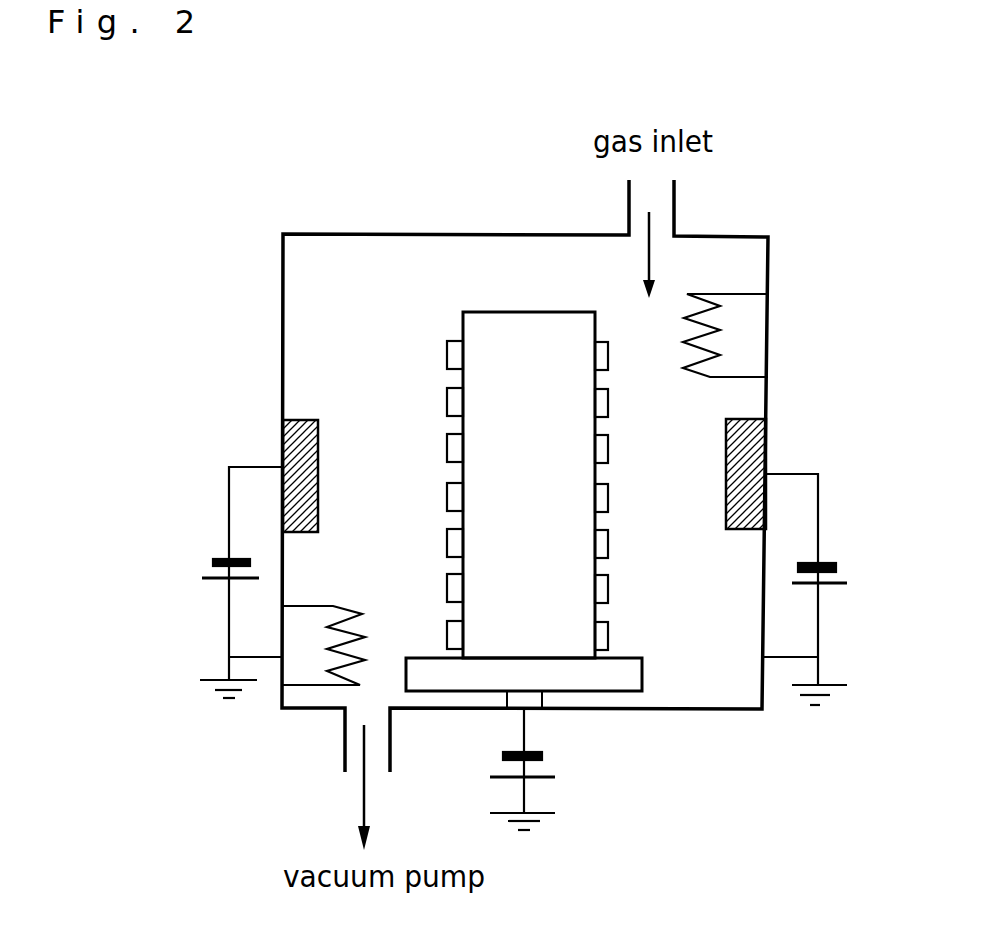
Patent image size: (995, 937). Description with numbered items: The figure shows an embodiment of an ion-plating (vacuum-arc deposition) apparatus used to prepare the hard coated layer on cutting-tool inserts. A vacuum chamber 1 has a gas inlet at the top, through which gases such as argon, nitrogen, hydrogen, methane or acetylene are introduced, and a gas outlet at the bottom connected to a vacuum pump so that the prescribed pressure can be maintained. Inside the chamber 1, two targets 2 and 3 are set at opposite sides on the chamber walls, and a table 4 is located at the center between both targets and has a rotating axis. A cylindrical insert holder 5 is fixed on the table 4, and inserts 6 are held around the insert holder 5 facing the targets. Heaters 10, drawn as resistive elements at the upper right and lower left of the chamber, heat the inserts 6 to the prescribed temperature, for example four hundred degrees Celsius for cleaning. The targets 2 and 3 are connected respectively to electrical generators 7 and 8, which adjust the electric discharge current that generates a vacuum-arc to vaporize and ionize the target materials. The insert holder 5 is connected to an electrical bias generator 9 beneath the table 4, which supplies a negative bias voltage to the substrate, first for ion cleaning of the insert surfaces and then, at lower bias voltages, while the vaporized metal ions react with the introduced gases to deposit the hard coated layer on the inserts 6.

The vacuum chamber 1 is at (375, 234).
The target 2 is at (298, 450).
The target 3 is at (766, 435).
The table 4 is at (627, 683).
The cylindrical insert holder 5 is at (520, 312).
The inserts 6 is at (447, 352).
The electrical generator 7 is at (213, 560).
The electrical generator 8 is at (830, 595).
The electrical bias generator 9 is at (500, 786).
The heaters 10 is at (710, 342).